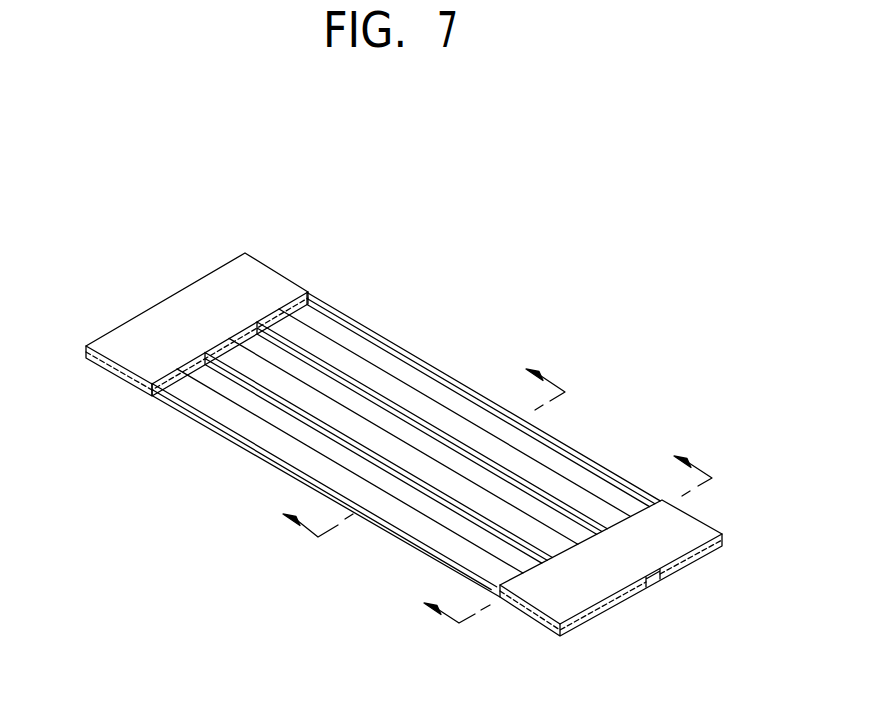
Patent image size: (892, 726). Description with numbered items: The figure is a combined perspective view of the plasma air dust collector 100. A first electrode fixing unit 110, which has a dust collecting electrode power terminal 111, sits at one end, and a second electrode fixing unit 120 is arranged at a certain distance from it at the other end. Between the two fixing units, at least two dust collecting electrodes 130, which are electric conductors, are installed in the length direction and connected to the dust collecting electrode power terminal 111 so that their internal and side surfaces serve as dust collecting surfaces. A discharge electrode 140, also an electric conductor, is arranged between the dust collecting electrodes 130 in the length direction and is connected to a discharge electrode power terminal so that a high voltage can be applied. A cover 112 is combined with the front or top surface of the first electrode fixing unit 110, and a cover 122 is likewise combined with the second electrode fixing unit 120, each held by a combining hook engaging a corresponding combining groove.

The plasma air dust collector 100 is at (447, 240).
The first electrode fixing unit 110 is at (640, 601).
The dust collecting electrode power terminal 111 is at (650, 586).
The cover 112 is at (697, 531).
The second electrode fixing unit 120 is at (184, 335).
The cover 122 is at (268, 282).
The dust collecting electrode 130 is at (428, 494).
The discharge electrode 140 is at (308, 445).